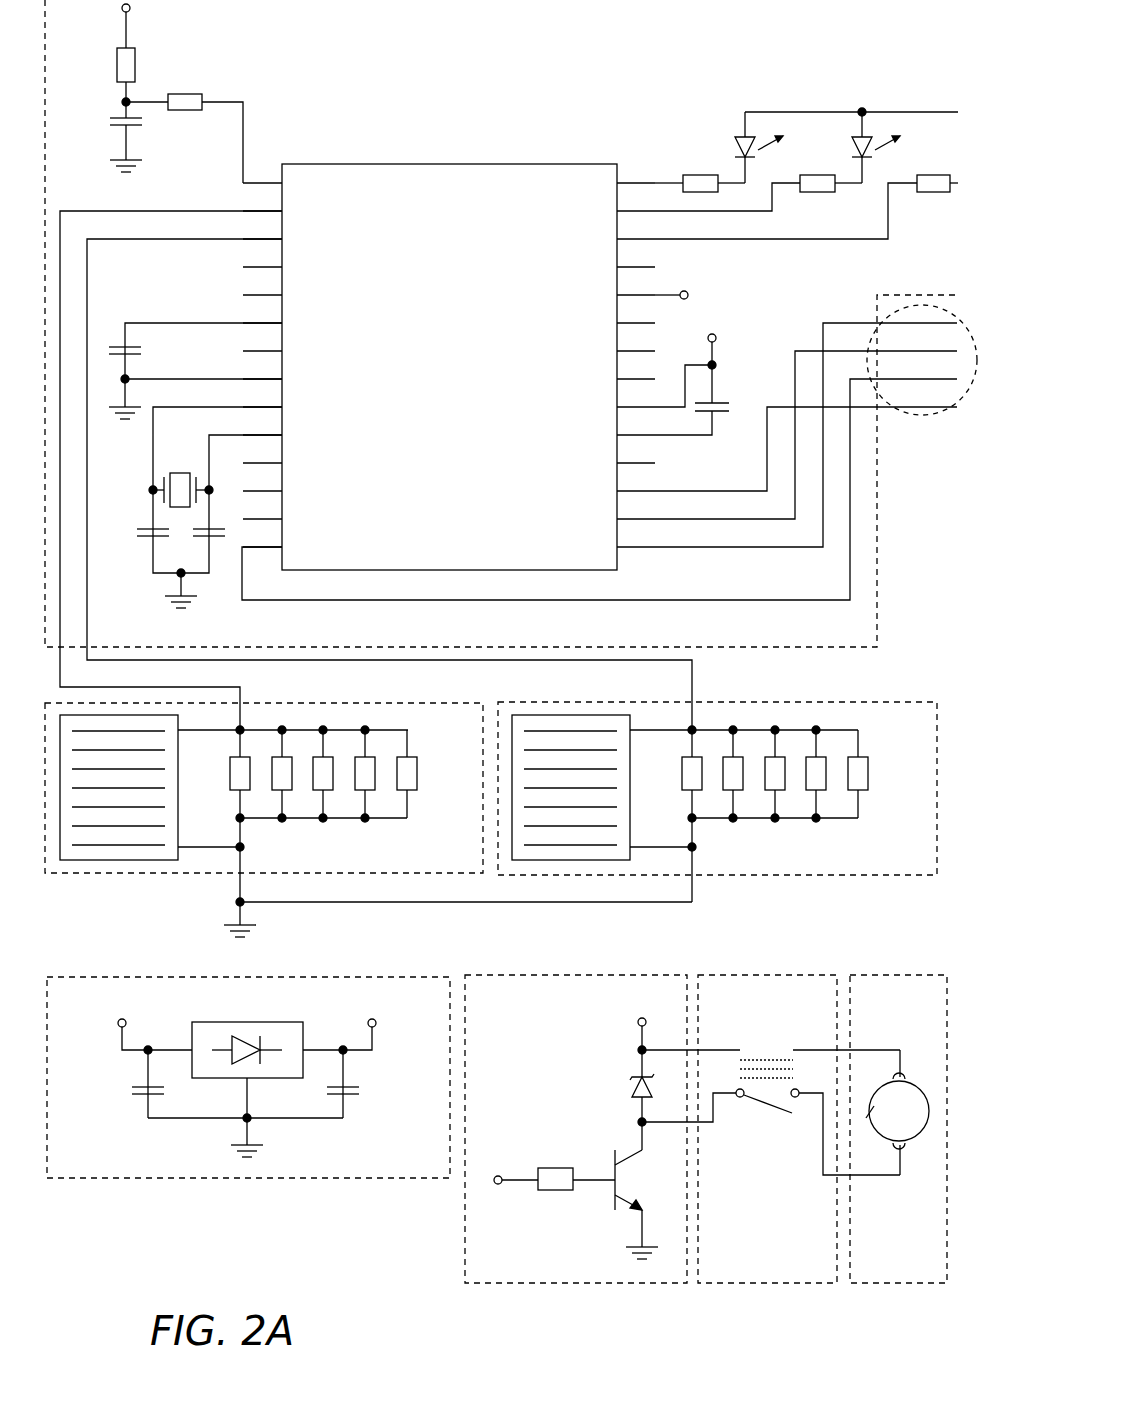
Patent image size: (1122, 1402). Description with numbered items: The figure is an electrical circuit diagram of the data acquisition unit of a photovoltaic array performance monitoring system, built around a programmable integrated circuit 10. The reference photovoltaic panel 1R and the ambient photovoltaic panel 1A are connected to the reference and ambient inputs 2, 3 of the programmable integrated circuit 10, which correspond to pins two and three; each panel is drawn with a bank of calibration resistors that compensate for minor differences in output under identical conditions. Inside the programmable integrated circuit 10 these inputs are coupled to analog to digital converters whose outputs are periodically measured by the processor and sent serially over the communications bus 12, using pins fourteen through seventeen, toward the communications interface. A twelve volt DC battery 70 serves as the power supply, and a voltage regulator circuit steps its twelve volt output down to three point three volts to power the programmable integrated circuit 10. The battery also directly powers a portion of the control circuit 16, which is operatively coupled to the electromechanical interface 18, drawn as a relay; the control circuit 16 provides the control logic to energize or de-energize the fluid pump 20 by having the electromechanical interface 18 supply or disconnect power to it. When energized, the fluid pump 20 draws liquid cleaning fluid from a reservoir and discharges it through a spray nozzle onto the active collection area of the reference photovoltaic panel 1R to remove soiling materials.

The programmable integrated circuit 10 is at (866, 640).
The communications bus 12 is at (912, 412).
The reference input 2 is at (243, 694).
The ambient input 3 is at (692, 689).
The reference photovoltaic panel 1R is at (472, 869).
The ambient photovoltaic panel 1A is at (920, 869).
The 12 VDC battery 70 is at (437, 1171).
The control circuit 16 is at (497, 1276).
The electromechanical interface 18 is at (730, 1276).
The fluid pump 20 is at (882, 1276).